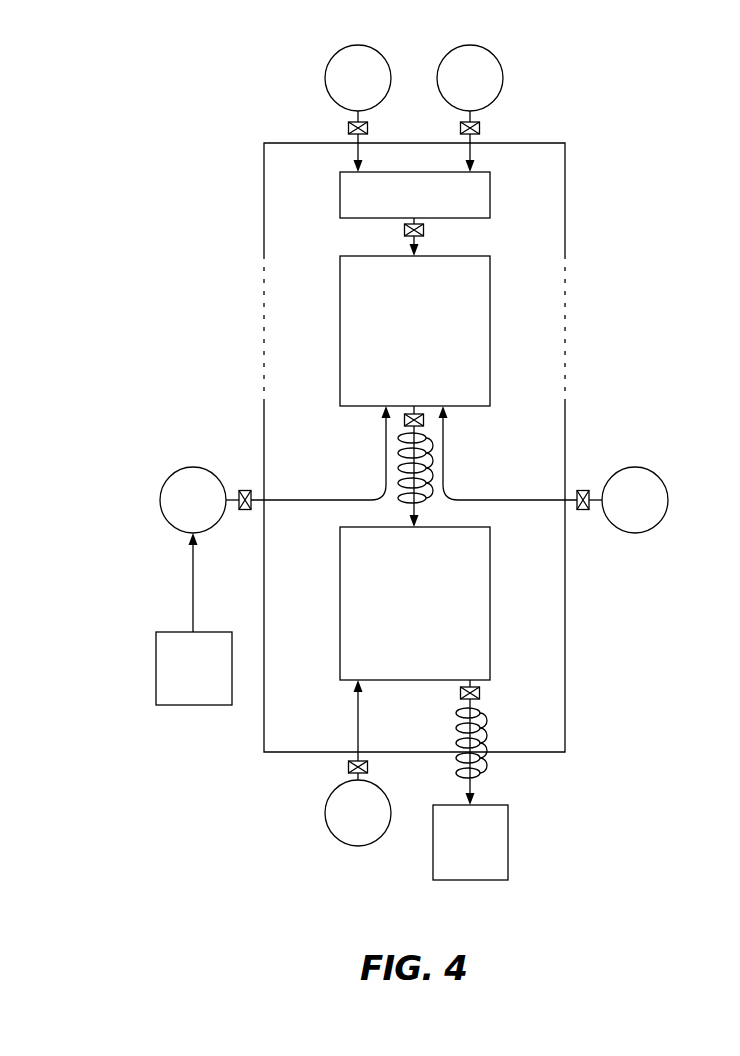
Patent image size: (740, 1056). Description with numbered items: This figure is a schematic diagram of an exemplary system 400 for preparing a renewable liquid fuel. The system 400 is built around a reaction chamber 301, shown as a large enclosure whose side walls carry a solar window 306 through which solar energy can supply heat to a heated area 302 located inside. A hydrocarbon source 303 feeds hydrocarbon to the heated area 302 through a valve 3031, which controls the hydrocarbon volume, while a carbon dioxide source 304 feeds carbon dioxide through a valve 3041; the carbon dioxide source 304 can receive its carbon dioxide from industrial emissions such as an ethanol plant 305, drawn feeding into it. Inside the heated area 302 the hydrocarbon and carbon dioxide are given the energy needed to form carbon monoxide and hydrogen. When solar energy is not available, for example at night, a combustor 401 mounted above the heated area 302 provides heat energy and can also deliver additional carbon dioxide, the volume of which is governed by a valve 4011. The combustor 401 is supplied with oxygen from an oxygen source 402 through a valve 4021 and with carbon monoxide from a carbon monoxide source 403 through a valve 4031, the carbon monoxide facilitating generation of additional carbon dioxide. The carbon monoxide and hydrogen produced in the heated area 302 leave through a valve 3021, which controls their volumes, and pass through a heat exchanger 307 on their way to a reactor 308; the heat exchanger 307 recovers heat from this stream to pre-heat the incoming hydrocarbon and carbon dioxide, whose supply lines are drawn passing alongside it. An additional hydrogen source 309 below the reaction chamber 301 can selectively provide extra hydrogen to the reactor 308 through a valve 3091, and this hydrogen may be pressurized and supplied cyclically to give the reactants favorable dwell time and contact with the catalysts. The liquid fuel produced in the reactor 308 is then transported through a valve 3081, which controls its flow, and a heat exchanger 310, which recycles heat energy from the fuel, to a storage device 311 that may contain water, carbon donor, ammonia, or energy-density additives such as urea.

The system 400 is at (162, 137).
The reaction chamber 301 is at (414, 436).
The heated area 302 is at (415, 324).
The hydrocarbon source 303 is at (645, 496).
The valve 3031 is at (583, 490).
The carbon dioxide source 304 is at (183, 496).
The valve 3041 is at (245, 490).
The ethanol plant 305 is at (200, 619).
The solar window 306 is at (245, 331).
The heat exchanger 307 is at (403, 498).
The reactor 308 is at (415, 598).
The valve 3081 is at (480, 693).
The additional hydrogen source 309 is at (340, 809).
The valve 3091 is at (348, 767).
The heat exchanger 310 is at (492, 752).
The storage device 311 is at (493, 842).
The combustor 401 is at (434, 198).
The valve 4011 is at (404, 230).
The oxygen source 402 is at (371, 76).
The valve 4021 is at (348, 127).
The carbon monoxide source 403 is at (483, 76).
The valve 4031 is at (490, 128).
The valve 3021 is at (414, 413).